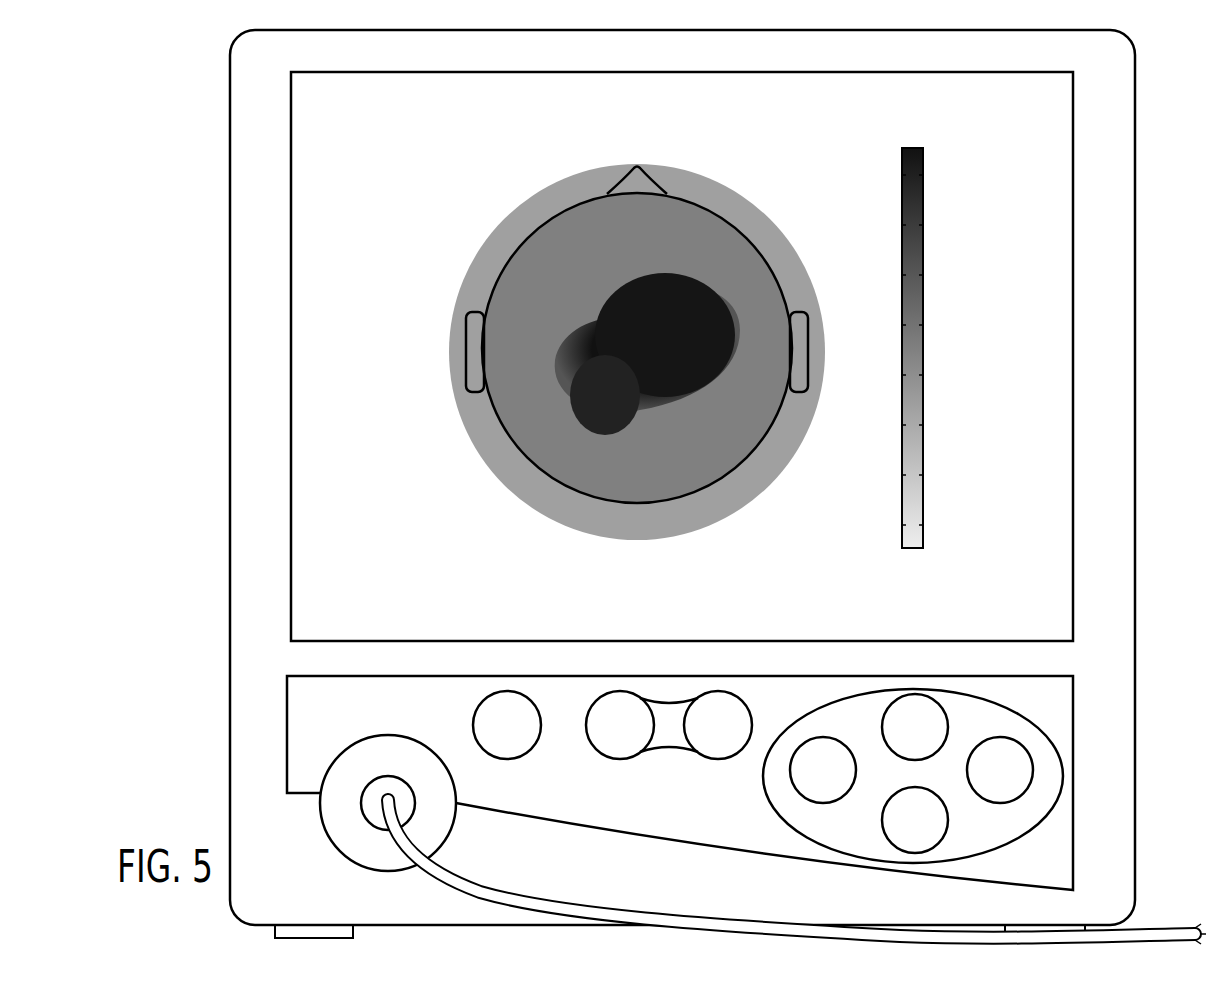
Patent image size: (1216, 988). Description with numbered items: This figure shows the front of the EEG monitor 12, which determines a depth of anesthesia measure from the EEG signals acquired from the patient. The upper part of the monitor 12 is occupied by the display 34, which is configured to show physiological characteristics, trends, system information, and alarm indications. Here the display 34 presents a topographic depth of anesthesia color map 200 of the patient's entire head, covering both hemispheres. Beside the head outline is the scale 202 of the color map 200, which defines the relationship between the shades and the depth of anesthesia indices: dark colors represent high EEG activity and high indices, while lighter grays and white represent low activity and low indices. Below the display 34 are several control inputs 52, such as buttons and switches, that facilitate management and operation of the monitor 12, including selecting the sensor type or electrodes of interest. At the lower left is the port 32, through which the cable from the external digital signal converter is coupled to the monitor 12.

The EEG monitor 12 is at (230, 352).
The display 34 is at (291, 197).
The topographic depth of anesthesia color map 200 is at (709, 168).
The scale 202 is at (925, 162).
The control inputs 52 is at (497, 758).
The port 32 is at (362, 802).